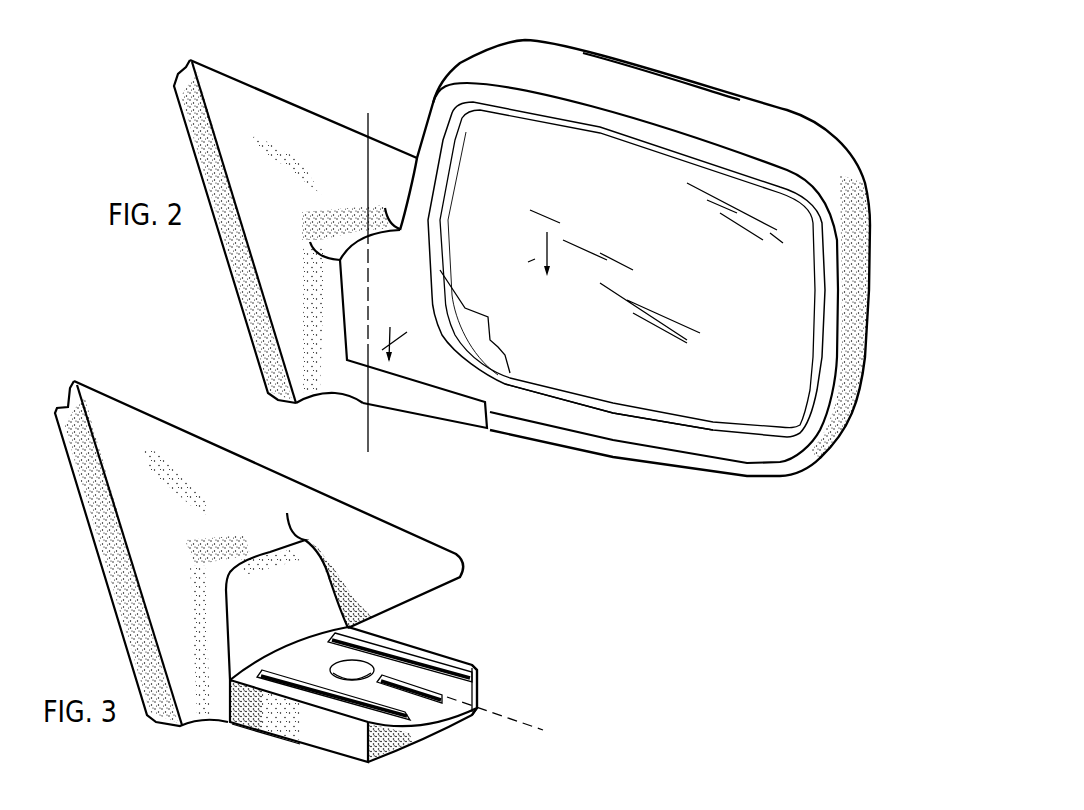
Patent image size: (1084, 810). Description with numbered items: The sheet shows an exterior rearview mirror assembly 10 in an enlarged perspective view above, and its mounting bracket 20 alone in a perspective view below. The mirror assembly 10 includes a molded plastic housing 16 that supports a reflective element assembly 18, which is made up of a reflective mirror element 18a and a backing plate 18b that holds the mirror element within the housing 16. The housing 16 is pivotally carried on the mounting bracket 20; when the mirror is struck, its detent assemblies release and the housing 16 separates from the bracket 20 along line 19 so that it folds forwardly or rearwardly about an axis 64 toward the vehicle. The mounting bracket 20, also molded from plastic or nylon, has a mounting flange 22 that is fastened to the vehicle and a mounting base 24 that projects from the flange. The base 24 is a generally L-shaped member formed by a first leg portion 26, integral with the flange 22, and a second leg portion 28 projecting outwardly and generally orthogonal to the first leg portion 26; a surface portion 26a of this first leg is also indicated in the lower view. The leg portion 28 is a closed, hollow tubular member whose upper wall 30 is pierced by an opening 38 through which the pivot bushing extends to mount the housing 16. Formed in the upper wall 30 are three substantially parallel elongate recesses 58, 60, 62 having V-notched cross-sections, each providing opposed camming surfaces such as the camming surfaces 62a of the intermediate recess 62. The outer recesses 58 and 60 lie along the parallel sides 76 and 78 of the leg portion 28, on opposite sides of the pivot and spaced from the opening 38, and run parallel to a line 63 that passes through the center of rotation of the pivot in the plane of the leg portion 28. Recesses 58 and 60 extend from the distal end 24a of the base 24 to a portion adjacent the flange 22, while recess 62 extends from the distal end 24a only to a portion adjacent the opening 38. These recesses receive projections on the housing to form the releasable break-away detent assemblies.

In FIG. 2, the exterior rearview mirror assembly 10 is at (635, 246).
In FIG. 2, the housing 16 is at (765, 120).
In FIG. 2, the reflective element assembly 18 is at (626, 246).
In FIG. 2, the reflective mirror element 18a is at (597, 383).
In FIG. 2, the backing plate 18b is at (470, 310).
In FIG. 2, the line 19 is at (357, 365).
In FIG. 2, the mounting bracket 20 is at (330, 255).
In FIG. 3, the mounting bracket 20 is at (326, 571).
In FIG. 2, the mounting flange 22 is at (307, 120).
In FIG. 3, the mounting flange 22 is at (120, 408).
In FIG. 2, the mounting base 24 is at (330, 408).
In FIG. 3, the mounting base 24 is at (413, 679).
In FIG. 3, the distal end 24a is at (440, 707).
In FIG. 2, the first leg portion 26 is at (362, 216).
In FIG. 3, the first leg portion 26 is at (294, 582).
In FIG. 3, the rib surface 26a is at (252, 535).
In FIG. 2, the second leg portion 28 is at (447, 408).
In FIG. 3, the second leg portion 28 is at (318, 740).
In FIG. 3, the upper wall 30 is at (386, 667).
In FIG. 3, the opening 38 is at (338, 658).
In FIG. 3, the recess 58 is at (505, 676).
In FIG. 3, the recess 60 is at (410, 719).
In FIG. 3, the recess 62 is at (443, 701).
In FIG. 3, the camming surfaces 62a is at (420, 683).
In FIG. 3, the line 63 is at (535, 727).
In FIG. 2, the axis 64 is at (368, 125).
In FIG. 3, the side 76 is at (479, 688).
In FIG. 3, the side 78 is at (298, 730).